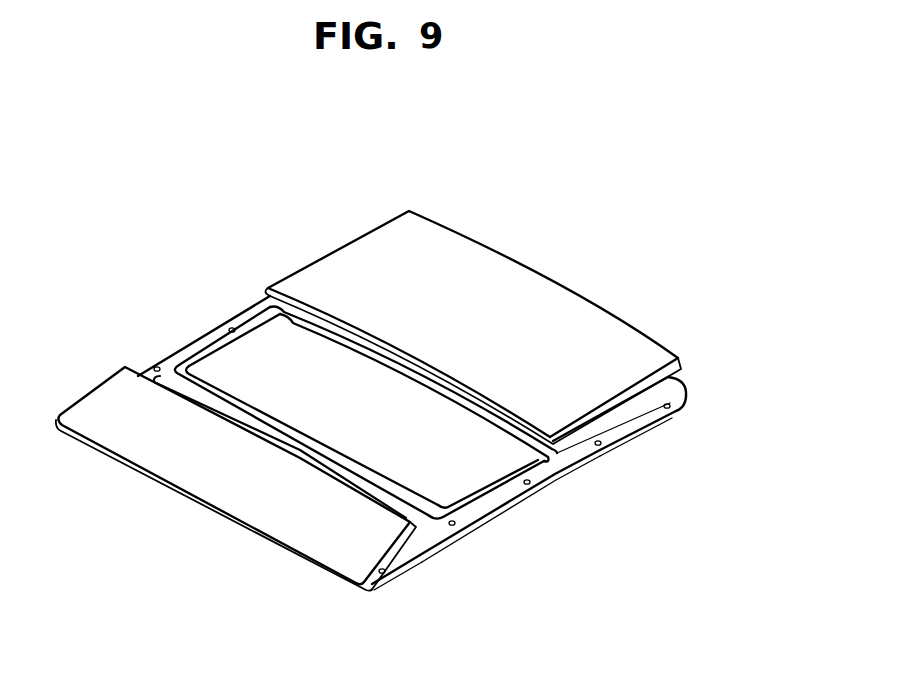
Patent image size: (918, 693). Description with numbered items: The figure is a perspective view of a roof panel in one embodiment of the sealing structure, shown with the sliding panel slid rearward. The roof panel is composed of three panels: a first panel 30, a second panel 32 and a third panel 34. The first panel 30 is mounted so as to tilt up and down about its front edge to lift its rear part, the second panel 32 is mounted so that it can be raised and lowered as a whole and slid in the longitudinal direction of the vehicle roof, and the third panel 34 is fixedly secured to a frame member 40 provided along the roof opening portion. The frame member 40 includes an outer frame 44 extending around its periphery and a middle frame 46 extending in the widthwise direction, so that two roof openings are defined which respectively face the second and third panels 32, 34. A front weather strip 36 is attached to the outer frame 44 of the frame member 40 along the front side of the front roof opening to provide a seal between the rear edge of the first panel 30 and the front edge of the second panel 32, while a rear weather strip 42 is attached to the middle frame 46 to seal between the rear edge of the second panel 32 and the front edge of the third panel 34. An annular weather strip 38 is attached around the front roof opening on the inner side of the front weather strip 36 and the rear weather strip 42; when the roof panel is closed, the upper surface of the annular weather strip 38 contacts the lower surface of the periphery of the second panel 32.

The first panel 30 is at (215, 477).
The second panel 32 is at (527, 310).
The third panel 34 is at (666, 384).
The front weather strip 36 is at (167, 372).
The annular weather strip 38 is at (497, 488).
The frame member 40 is at (400, 555).
The rear weather strip 42 is at (560, 452).
The outer frame 44 is at (468, 518).
The middle frame 46 is at (552, 460).